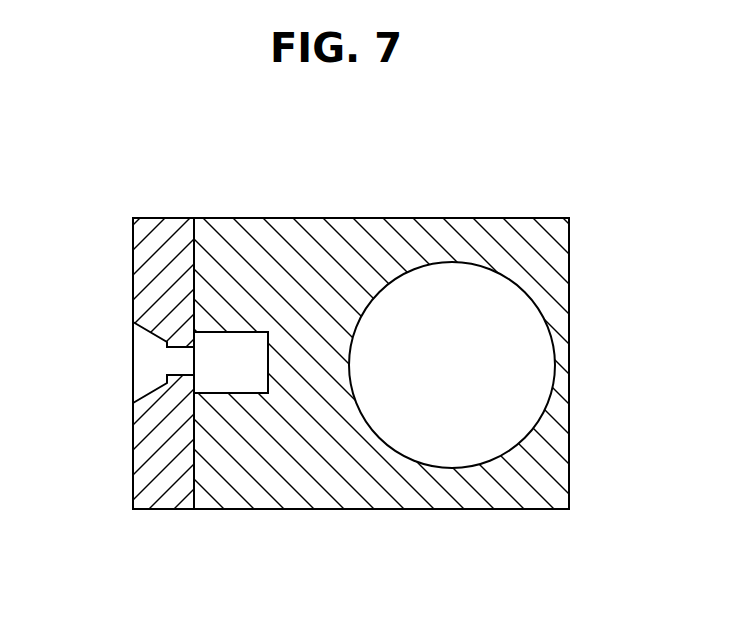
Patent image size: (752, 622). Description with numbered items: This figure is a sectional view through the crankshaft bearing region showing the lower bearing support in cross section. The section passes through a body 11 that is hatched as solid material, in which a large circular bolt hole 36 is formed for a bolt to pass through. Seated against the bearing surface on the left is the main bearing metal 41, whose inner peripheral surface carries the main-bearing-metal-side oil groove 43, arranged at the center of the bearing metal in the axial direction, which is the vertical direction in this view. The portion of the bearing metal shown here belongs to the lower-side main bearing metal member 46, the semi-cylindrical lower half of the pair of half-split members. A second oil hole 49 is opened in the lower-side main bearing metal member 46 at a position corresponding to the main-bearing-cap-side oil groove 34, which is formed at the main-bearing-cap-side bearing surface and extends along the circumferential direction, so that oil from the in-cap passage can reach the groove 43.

The housing body 11 is at (345, 492).
The main-bearing-cap-side oil groove 34 is at (223, 333).
The bolt hole 36 is at (532, 305).
The main bearing metal 41 is at (160, 197).
The main-bearing-metal-side oil groove 43 is at (157, 333).
The lower-side main bearing metal member 46 is at (160, 483).
The second oil hole 49 is at (187, 350).